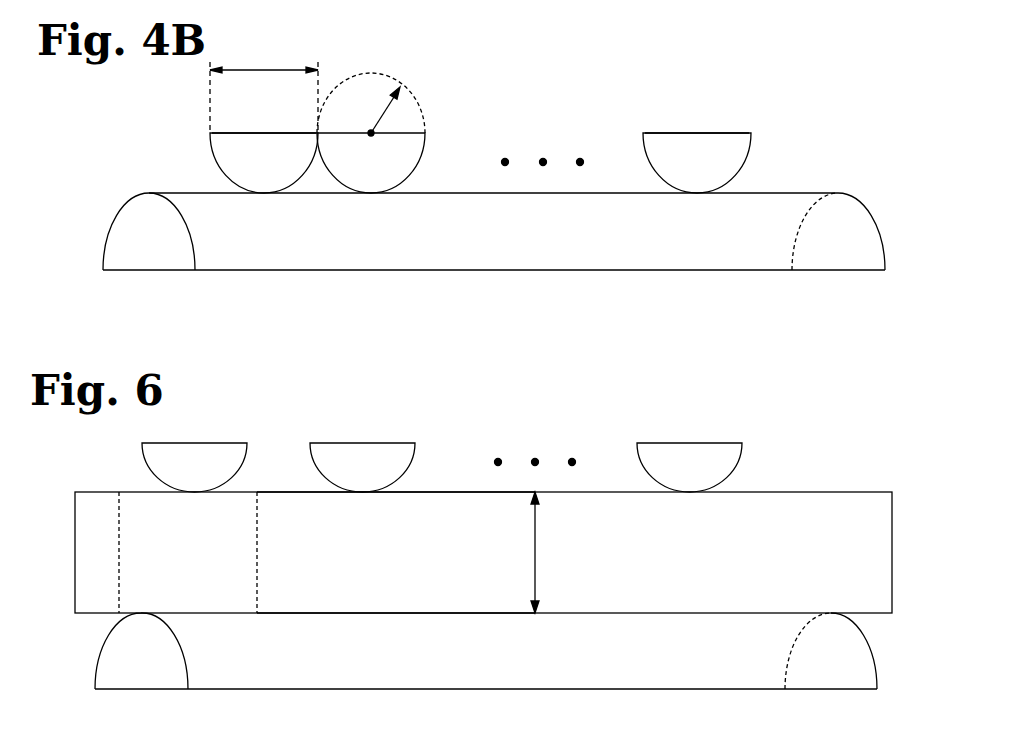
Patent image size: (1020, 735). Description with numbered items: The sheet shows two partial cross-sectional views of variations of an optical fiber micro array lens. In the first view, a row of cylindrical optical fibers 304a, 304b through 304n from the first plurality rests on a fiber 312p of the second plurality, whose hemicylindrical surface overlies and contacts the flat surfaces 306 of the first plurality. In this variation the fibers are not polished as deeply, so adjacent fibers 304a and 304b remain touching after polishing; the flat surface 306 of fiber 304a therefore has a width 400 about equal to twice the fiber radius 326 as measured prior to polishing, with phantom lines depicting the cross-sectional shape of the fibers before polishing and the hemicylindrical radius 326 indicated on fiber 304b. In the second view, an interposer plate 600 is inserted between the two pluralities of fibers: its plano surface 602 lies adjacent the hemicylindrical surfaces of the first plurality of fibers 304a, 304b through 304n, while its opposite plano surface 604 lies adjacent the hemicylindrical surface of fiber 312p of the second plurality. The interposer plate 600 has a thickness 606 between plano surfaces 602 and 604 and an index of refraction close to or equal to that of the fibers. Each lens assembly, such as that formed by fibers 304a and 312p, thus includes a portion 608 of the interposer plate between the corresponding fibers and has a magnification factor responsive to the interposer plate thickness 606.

In FIG. 4B, the optical fiber of the first plurality 304a is at (232, 170).
In FIG. 6, the optical fiber of the first plurality 304a is at (162, 476).
In FIG. 4B, the optical fiber of the first plurality 304b is at (339, 170).
In FIG. 6, the optical fiber of the first plurality 304b is at (331, 476).
In FIG. 4B, the optical fiber of the first plurality 304n is at (665, 169).
In FIG. 6, the optical fiber of the first plurality 304n is at (658, 476).
In FIG. 4B, the flat bottom surface 306 is at (239, 128).
In FIG. 4B, the optical fiber of the second plurality 312p is at (485, 247).
In FIG. 6, the optical fiber of the second plurality 312p is at (460, 664).
In FIG. 4B, the hemicylindrical radius 326 is at (387, 114).
In FIG. 4B, the width of flat surface 400 is at (267, 70).
In FIG. 6, the interposer plate 600 is at (739, 597).
In FIG. 6, the plano surface 602 is at (294, 480).
In FIG. 6, the plano surface 604 is at (309, 626).
In FIG. 6, the interposer plate thickness 606 is at (533, 563).
In FIG. 6, the portion of interposer plate 608 is at (164, 566).